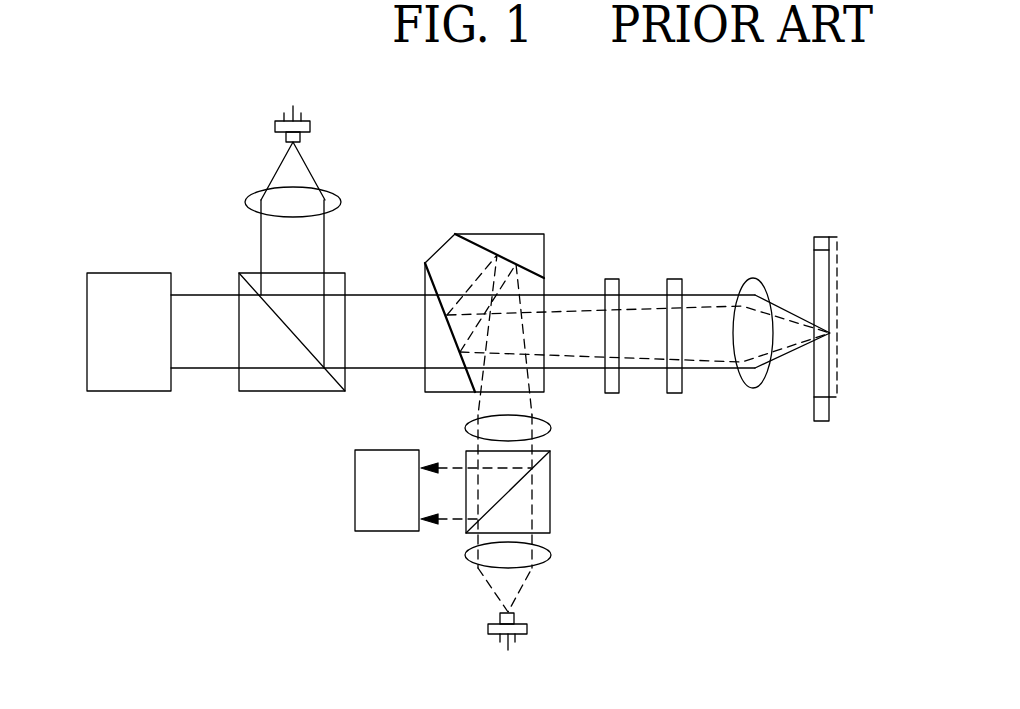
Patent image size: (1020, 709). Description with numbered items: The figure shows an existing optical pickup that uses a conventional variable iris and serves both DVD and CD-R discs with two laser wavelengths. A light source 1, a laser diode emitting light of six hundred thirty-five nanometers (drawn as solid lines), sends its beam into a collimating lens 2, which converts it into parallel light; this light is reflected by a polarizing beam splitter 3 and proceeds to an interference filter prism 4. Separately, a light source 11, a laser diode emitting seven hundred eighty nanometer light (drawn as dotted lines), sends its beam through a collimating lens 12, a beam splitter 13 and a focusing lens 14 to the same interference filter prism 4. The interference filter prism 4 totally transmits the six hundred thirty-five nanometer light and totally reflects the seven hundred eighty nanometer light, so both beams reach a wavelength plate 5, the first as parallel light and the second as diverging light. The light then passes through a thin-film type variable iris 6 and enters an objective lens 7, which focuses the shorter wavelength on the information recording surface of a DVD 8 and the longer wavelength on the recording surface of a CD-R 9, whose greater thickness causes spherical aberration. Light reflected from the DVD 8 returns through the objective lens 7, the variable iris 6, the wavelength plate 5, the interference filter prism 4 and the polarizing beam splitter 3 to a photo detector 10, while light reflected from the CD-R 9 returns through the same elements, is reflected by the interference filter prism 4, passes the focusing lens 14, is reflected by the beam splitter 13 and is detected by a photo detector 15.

The light source 1 is at (275, 125).
The collimating lens 2 is at (245, 203).
The polarizing beam splitter 3 is at (291, 392).
The interference filter prism 4 is at (503, 234).
The wavelength plate 5 is at (615, 279).
The thin-film type variable iris 6 is at (677, 279).
The objective lens 7 is at (758, 283).
The DVD 8 is at (829, 407).
The CD-R 9 is at (837, 320).
The photo detector 10 is at (127, 392).
The light source 11 is at (527, 628).
The collimating lens 12 is at (552, 555).
The beam splitter 13 is at (550, 490).
The focusing lens 14 is at (552, 428).
The photo detector 15 is at (355, 490).